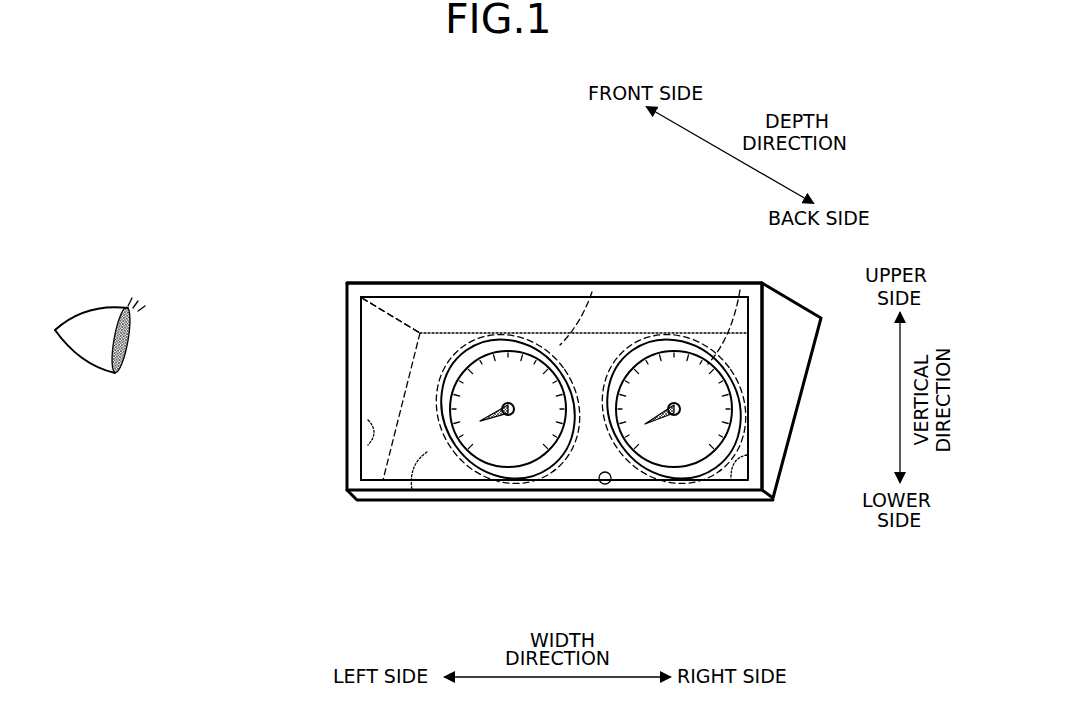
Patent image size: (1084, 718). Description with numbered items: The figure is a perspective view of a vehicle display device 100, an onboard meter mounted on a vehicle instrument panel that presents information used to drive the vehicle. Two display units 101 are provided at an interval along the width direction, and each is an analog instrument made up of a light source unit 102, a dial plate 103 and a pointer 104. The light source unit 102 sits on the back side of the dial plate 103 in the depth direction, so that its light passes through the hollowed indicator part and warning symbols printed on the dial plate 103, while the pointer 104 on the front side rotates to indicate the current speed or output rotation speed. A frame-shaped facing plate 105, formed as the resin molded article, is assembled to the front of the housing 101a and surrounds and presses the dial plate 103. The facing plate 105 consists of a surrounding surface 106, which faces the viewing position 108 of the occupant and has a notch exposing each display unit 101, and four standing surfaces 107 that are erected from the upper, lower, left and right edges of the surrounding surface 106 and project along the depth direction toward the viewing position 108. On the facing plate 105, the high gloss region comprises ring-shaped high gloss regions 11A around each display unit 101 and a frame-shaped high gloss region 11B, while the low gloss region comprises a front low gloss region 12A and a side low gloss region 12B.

The vehicle display device 100 is at (428, 190).
The display unit 101 is at (504, 466).
The housing 101a is at (798, 446).
The light source unit 102 is at (586, 296).
The dial plate 103 is at (582, 352).
The pointer 104 is at (486, 420).
The facing plate 105 is at (366, 395).
The surrounding surface 106 is at (422, 458).
The standing surface 107 is at (538, 336).
The viewing position 108 is at (87, 308).
The ring-shaped high gloss region 11A is at (730, 368).
The frame-shaped high gloss region 11B is at (372, 290).
The front low gloss region 12A is at (637, 347).
The side low gloss region 12B is at (473, 301).